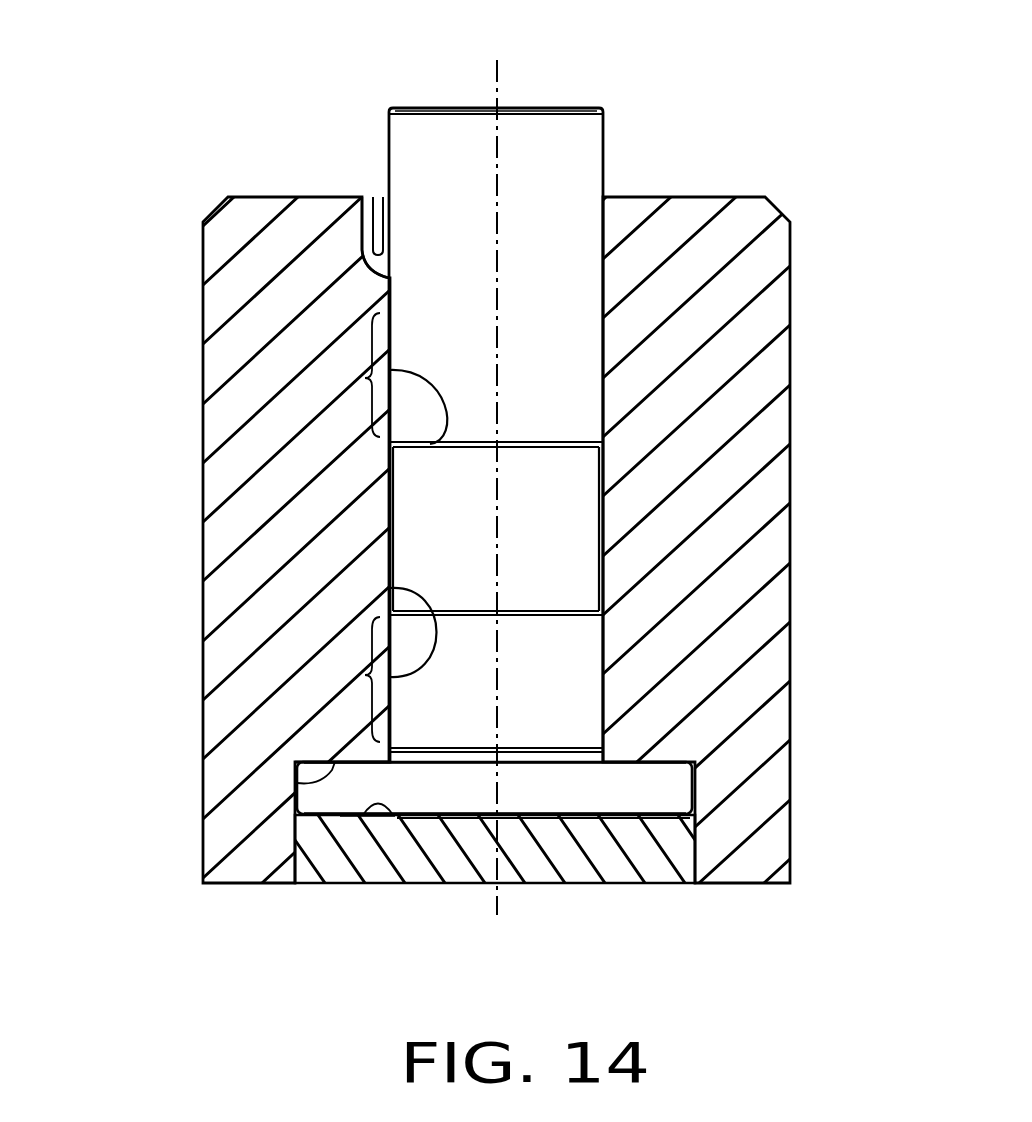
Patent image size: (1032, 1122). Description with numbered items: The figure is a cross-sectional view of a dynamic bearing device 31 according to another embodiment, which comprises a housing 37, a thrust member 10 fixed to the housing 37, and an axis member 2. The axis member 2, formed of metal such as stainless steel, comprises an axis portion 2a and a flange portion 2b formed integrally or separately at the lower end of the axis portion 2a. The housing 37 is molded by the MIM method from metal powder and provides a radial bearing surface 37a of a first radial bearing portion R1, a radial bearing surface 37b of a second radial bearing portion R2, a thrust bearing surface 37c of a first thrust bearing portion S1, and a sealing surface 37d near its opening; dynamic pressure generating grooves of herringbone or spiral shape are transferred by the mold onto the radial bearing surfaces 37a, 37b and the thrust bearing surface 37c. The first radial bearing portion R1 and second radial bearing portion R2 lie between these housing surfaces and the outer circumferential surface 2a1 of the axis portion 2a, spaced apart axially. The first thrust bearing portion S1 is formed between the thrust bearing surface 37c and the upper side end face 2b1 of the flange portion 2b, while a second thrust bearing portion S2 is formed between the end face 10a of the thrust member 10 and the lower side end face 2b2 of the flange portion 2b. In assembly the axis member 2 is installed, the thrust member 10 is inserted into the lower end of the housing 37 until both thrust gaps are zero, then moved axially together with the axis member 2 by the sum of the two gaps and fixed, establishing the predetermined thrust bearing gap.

The housing 37 is at (207, 217).
The sealing surface 37d is at (389, 213).
The outer circumferential surface 2a1 is at (362, 250).
The axis member 2 is at (605, 136).
The axis portion 2a is at (538, 124).
The radial bearing surface 37a is at (390, 462).
The radial bearing surface 37b is at (388, 590).
The first radial bearing portion R1 is at (356, 377).
The second radial bearing portion R2 is at (356, 675).
The first thrust bearing portion S1 is at (341, 755).
The thrust bearing surface 37c is at (293, 770).
The flange portion 2b is at (675, 790).
The upper side end face 2b1 is at (700, 760).
The lower side end face 2b2 is at (678, 830).
The thrust member 10 is at (614, 878).
The end face 10a is at (363, 815).
The second thrust bearing portion S2 is at (337, 818).
The dynamic bearing device 31 is at (807, 172).